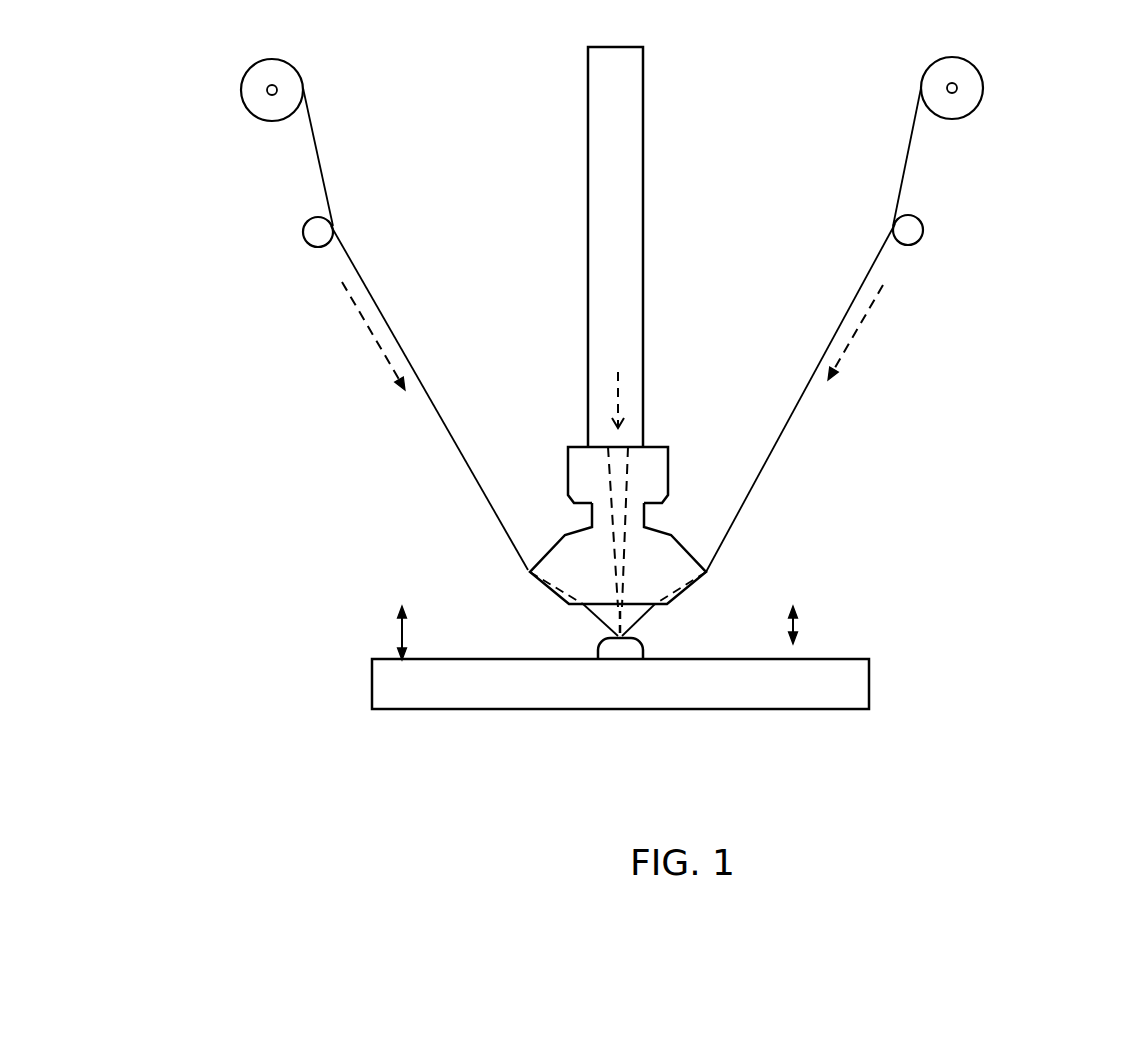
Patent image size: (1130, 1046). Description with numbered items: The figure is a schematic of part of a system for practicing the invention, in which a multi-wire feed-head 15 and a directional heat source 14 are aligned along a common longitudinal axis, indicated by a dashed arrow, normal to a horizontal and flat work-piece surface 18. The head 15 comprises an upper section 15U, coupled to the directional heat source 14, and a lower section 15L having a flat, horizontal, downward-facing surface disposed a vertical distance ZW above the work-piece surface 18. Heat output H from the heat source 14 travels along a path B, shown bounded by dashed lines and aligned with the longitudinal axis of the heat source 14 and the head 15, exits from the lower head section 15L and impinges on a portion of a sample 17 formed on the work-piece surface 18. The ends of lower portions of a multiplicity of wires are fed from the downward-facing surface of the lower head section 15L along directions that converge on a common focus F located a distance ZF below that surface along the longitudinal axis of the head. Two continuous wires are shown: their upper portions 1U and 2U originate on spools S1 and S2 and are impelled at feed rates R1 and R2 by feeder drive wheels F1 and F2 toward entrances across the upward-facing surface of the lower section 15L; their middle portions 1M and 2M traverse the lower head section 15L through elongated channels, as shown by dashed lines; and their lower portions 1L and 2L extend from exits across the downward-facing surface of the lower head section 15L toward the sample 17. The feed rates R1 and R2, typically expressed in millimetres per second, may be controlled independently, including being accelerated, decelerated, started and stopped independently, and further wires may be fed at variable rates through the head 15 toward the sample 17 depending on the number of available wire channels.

The spool S1 is at (253, 120).
The spool S2 is at (977, 115).
The feeder drive wheel F1 is at (305, 247).
The feeder drive wheel F2 is at (920, 243).
The upper portion of wire 1 1U is at (318, 148).
The upper portion of wire 2 2U is at (817, 345).
The middle portion of wire 1 1M is at (557, 590).
The middle portion of wire 2 2M is at (677, 588).
The lower portion of wire 1 1L is at (580, 628).
The lower portion of wire 2 2L is at (652, 615).
The feed rate of wire 1 R1 is at (368, 336).
The feed rate of wire 2 R2 is at (866, 336).
The directional heat source 14 is at (593, 222).
The heat output H is at (619, 379).
The heat path B is at (623, 492).
The multi-wire feed-head 15 is at (687, 522).
The upper section of head 15U is at (558, 442).
The lower section of head 15L is at (742, 526).
The sample 17 is at (644, 656).
The common focus F is at (620, 647).
The work-piece surface 18 is at (383, 659).
The vertical distance ZW is at (428, 633).
The focus distance ZF is at (815, 630).